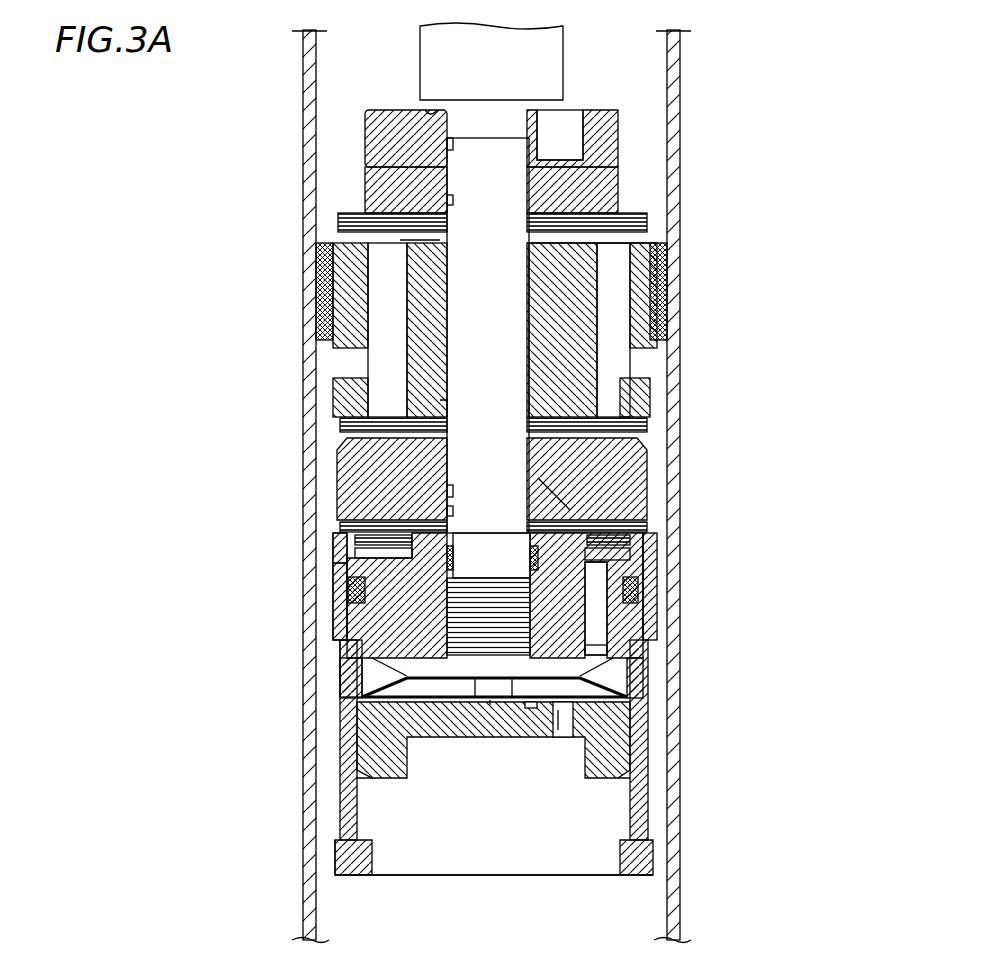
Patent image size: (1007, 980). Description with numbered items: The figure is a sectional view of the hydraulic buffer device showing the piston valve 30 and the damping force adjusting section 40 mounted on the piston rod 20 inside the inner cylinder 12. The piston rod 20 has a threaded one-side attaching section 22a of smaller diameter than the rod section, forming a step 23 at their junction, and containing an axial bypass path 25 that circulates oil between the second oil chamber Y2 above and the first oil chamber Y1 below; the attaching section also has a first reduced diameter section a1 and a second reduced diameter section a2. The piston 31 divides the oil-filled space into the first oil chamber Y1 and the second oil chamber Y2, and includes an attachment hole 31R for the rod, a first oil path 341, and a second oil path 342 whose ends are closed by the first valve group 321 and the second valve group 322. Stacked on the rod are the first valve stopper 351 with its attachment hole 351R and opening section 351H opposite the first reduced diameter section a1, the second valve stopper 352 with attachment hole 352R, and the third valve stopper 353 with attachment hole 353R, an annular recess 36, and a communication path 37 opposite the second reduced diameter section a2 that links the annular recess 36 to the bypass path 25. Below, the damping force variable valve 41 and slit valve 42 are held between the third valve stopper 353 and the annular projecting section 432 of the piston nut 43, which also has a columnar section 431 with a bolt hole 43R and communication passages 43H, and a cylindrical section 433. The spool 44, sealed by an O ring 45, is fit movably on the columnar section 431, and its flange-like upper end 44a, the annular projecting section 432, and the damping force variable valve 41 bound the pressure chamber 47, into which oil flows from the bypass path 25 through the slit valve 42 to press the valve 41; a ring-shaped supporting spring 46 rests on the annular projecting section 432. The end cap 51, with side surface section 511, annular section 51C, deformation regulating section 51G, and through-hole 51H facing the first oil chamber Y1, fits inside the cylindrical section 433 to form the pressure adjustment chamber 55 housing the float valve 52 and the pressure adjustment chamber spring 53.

The inner cylinder 12 is at (682, 98).
The piston rod 20 is at (578, 67).
The one-side attaching section 22a is at (515, 372).
The step 23 is at (432, 112).
The bypass path 25 is at (540, 332).
The piston valve 30 is at (660, 200).
The piston 31 is at (345, 352).
The attachment hole 31R is at (445, 405).
The first valve group 321 is at (647, 425).
The second valve group 322 is at (645, 222).
The first oil path 341 is at (378, 295).
The second oil path 342 is at (612, 270).
The first valve stopper 351 is at (405, 120).
The opening section 351H is at (565, 130).
The attachment hole 351R is at (450, 143).
The second valve stopper 352 is at (395, 185).
The attachment hole 352R is at (450, 200).
The third valve stopper 353 is at (365, 478).
The attachment hole 353R is at (450, 513).
The annular recess 36 is at (603, 523).
The communication path 37 is at (548, 480).
The damping force adjusting section 40 is at (322, 794).
The damping force variable valve 41 is at (633, 540).
The slit valve 42 is at (628, 650).
The piston nut 43 is at (454, 686).
The columnar section 431 is at (345, 618).
The annular projecting section 432 is at (350, 540).
The cylindrical section 433 is at (345, 652).
The communication passage 43H is at (600, 652).
The bolt hole 43R is at (530, 614).
The spool 44 is at (600, 625).
The upper end 44a is at (617, 545).
The O ring 45 is at (605, 597).
The supporting spring 46 is at (636, 590).
The pressure chamber 47 is at (650, 568).
The end cap 51 is at (650, 858).
The side surface section 511 is at (335, 860).
The annular section 51C is at (600, 722).
The deformation regulating section 51G is at (533, 705).
The through-hole 51H is at (563, 724).
The float valve 52 is at (362, 708).
The pressure adjustment chamber spring 53 is at (380, 690).
The pressure adjustment chamber 55 is at (628, 692).
The first reduced diameter section a1 is at (430, 240).
The second reduced diameter section a2 is at (457, 492).
The first oil chamber Y1 is at (432, 915).
The second oil chamber Y2 is at (651, 100).